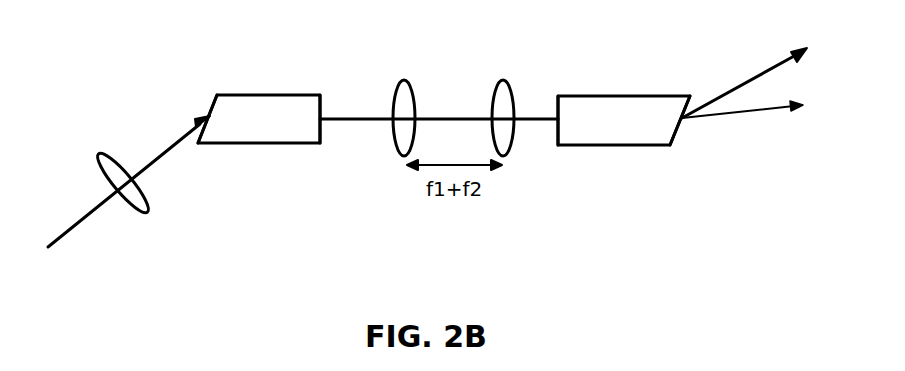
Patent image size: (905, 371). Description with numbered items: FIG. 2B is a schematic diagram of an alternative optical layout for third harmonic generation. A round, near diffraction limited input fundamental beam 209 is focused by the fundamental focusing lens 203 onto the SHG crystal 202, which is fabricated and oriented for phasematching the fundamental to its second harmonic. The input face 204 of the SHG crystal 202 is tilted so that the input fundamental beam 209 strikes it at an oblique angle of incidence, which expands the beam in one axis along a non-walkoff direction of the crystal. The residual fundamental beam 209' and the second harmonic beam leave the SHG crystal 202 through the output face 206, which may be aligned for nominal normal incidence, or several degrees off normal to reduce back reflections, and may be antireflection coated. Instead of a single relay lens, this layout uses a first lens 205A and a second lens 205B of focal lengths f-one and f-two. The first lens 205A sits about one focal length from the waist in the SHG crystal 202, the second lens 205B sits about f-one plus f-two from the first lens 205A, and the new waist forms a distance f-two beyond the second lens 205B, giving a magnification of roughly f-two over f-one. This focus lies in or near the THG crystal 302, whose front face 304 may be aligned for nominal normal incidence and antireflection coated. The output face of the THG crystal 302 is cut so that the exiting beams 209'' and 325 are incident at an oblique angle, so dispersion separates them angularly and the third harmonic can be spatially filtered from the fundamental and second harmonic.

The SHG crystal 202 is at (288, 147).
The fundamental focusing lens 203 is at (147, 215).
The input face 204 is at (207, 102).
The first lens 205A is at (405, 78).
The second lens 205B is at (503, 80).
The output face 206 is at (320, 132).
The input fundamental beam 209 is at (129, 199).
The residual fundamental beam 209' is at (439, 82).
The output beam 209'' is at (735, 79).
The THG crystal 302 is at (633, 150).
The front face 304 is at (557, 138).
The output beam 325 is at (747, 117).